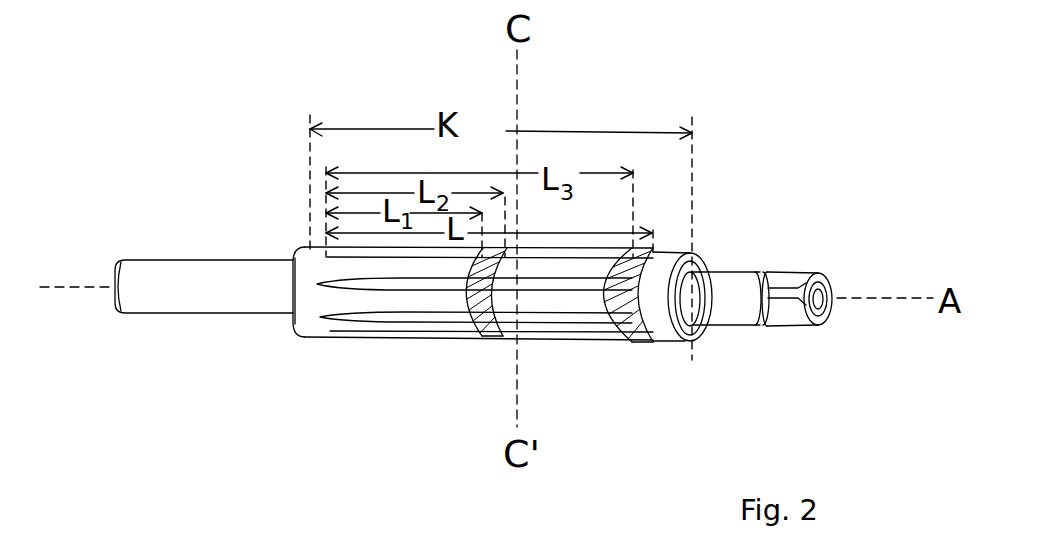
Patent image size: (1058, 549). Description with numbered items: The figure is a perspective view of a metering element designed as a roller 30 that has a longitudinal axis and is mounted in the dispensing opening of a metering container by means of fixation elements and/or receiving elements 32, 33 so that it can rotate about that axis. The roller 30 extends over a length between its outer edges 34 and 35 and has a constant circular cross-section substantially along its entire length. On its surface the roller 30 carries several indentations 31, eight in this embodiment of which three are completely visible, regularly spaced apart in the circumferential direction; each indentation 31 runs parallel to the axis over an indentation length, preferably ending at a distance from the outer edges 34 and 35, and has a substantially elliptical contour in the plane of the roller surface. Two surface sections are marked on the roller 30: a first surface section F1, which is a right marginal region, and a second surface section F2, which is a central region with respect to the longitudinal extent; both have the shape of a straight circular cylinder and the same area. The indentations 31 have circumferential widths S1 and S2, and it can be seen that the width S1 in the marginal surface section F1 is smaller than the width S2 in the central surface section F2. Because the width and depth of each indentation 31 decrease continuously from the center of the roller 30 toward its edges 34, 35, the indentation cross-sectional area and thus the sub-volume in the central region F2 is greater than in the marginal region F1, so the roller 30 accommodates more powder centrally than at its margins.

The roller 30 is at (667, 263).
The indentations 31 is at (398, 317).
The fixation element / receiving element 32 is at (152, 273).
The fixation element / receiving element 33 is at (787, 277).
The outer edge 34 is at (293, 317).
The outer edge 35 is at (702, 258).
The width of indentation in first surface section S1 is at (601, 330).
The width of indentation in second surface section S2 is at (472, 280).
The first surface section F1 is at (636, 336).
The second surface section F2 is at (493, 332).